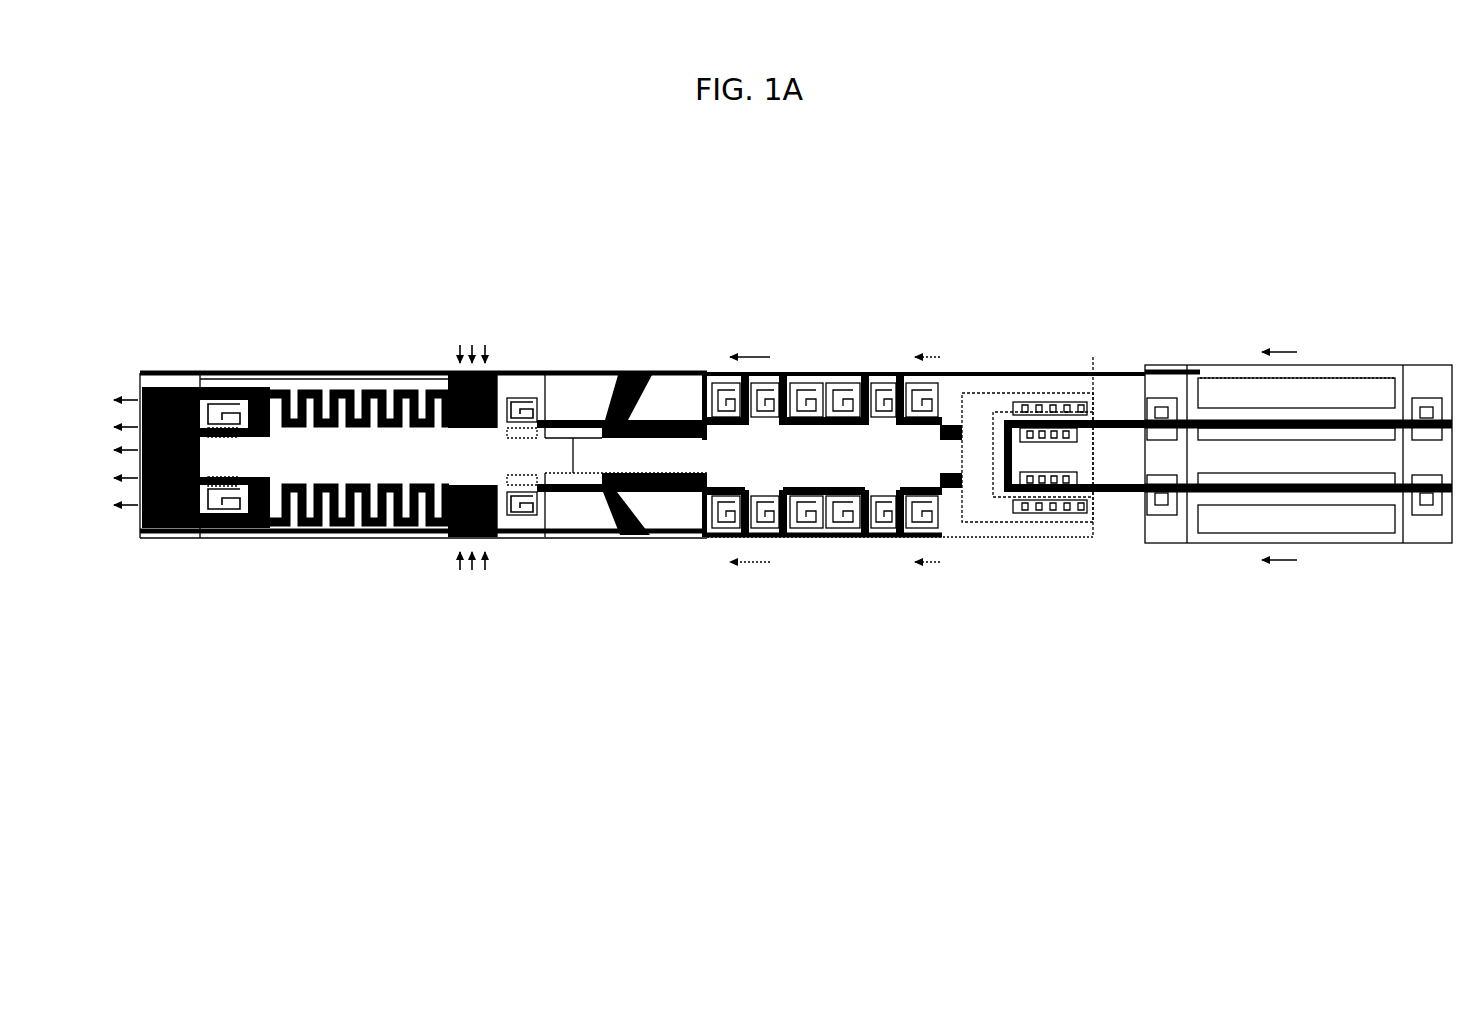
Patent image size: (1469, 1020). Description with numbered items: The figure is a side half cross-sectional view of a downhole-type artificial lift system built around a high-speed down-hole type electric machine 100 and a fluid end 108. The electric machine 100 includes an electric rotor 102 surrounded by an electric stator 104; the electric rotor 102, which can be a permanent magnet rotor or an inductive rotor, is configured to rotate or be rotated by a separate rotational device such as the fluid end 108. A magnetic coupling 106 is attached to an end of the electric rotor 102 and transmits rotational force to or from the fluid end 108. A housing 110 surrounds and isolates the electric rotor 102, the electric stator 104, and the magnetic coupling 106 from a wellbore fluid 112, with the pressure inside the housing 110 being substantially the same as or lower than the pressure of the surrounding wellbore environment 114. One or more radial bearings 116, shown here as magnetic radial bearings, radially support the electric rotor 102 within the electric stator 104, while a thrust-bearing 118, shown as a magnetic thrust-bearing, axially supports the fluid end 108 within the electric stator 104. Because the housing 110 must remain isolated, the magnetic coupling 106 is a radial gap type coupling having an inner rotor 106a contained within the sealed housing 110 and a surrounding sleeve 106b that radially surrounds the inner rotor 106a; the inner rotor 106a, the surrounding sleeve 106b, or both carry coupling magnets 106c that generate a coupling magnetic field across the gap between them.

The high-speed down-hole type electric machine 100 is at (1275, 236).
The electric rotor 102 is at (1330, 437).
The electric stator 104 is at (1218, 372).
The magnetic coupling 106 is at (1029, 448).
The inner rotor 106a is at (1020, 477).
The surrounding sleeve 106b is at (1047, 510).
The coupling magnets 106c is at (1064, 380).
The fluid end 108 is at (400, 330).
The housing 110 is at (1287, 494).
The wellbore fluid 112 is at (462, 562).
The wellbore environment 114 is at (826, 794).
The radial bearing 116 is at (1170, 497).
The thrust-bearing 118 is at (823, 370).